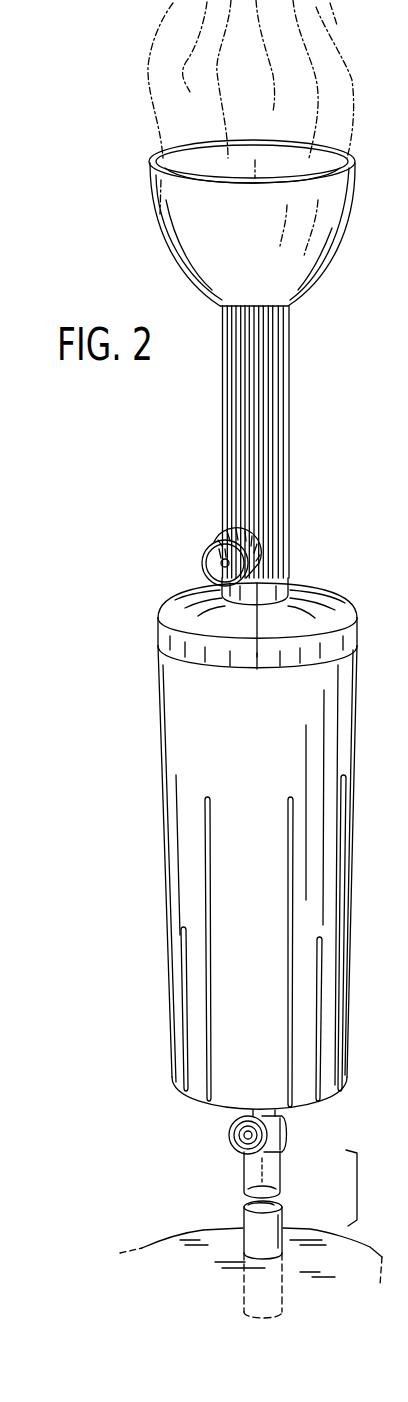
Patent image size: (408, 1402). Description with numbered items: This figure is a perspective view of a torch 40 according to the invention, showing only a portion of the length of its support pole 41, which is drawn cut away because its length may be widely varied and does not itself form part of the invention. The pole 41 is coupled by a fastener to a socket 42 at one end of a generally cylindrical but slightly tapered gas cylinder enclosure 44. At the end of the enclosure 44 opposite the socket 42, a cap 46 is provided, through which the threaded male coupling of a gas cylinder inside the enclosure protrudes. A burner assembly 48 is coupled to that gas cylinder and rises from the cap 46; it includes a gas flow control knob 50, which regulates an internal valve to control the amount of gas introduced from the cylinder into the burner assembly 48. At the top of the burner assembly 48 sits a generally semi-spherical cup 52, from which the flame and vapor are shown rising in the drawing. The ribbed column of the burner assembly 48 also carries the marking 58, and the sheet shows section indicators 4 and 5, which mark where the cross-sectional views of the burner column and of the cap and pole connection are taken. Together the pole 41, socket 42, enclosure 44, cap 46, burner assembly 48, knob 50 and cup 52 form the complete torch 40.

The section line 4- 4 is at (221, 97).
The section line 5- 5 is at (222, 612).
The torch 40 is at (133, 483).
The support pole 41 is at (273, 1170).
The socket 42 is at (283, 1124).
The gas cylinder enclosure 44 is at (177, 862).
The cap 46 is at (181, 610).
The burner assembly 48 is at (236, 421).
The gas flow control knob 50 is at (210, 553).
The cup 52 is at (178, 202).
The ribs 58 is at (237, 378).